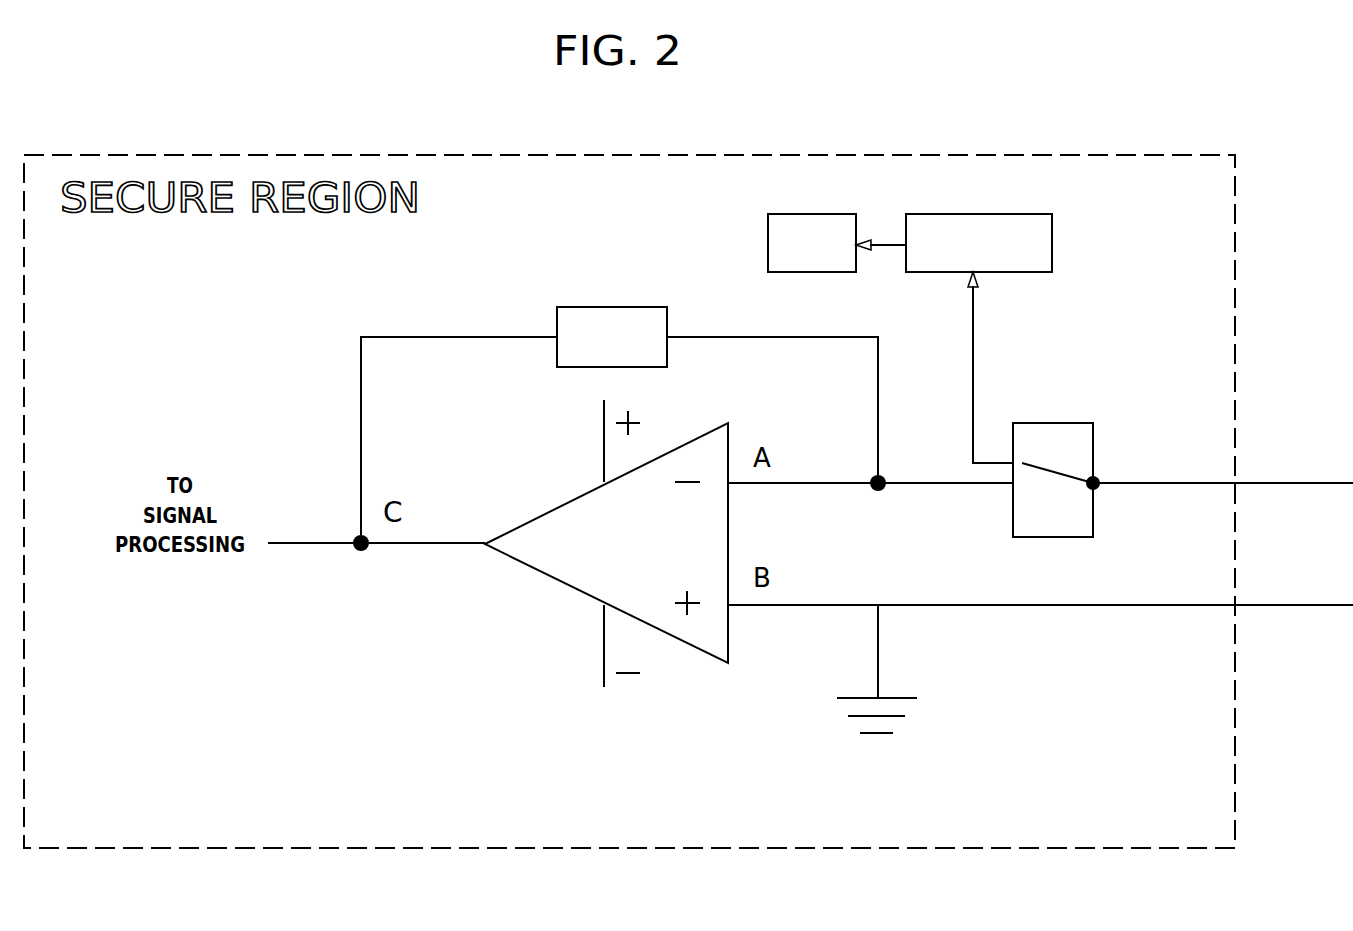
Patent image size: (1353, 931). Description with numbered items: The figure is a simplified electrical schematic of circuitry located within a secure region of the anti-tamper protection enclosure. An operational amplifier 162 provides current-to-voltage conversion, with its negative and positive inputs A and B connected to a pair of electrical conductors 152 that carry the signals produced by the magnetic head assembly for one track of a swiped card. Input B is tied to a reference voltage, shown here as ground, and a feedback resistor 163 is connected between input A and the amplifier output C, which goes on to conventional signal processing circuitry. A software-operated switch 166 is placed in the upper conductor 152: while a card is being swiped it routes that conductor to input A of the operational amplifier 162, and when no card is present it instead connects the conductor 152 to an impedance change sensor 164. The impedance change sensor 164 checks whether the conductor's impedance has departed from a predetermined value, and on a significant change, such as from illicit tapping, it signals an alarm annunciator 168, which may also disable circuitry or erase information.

The electrical conductors 152 is at (1145, 483).
The operational amplifier 162 is at (537, 520).
The resistor 163 is at (578, 307).
The impedance change sensor 164 is at (1052, 244).
The switch 166 is at (1093, 436).
The alarm annunciator 168 is at (768, 245).